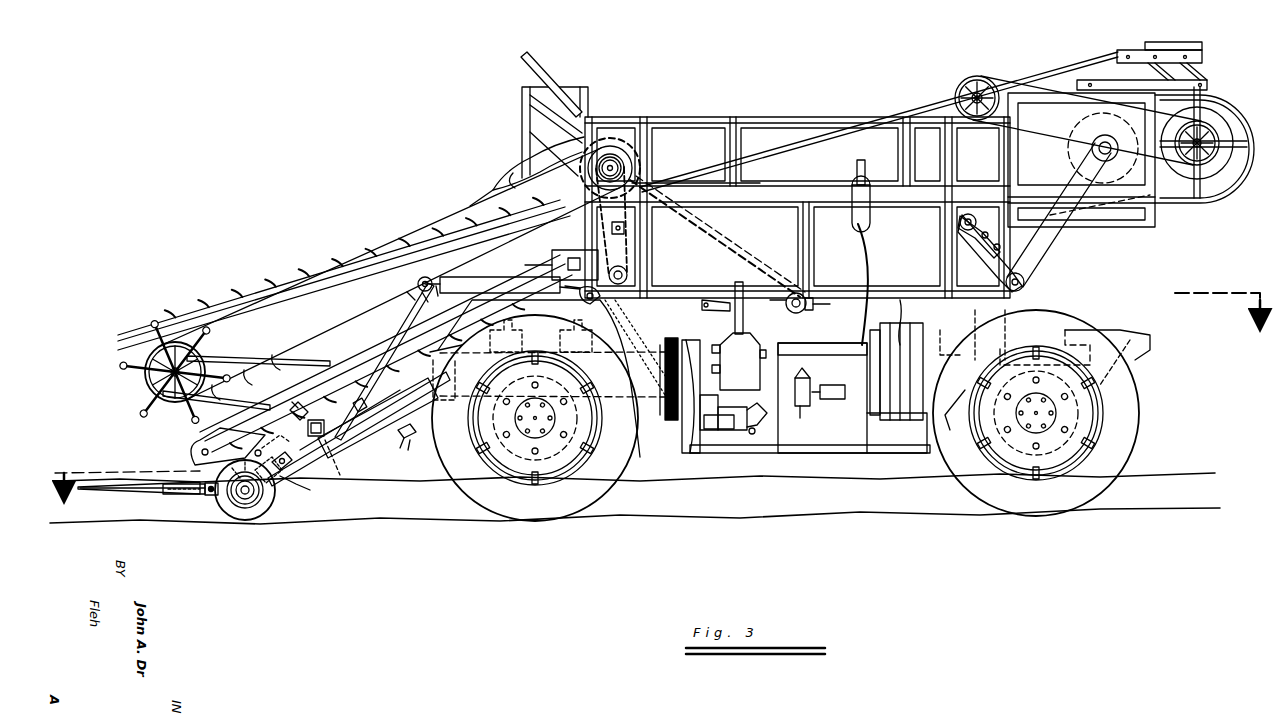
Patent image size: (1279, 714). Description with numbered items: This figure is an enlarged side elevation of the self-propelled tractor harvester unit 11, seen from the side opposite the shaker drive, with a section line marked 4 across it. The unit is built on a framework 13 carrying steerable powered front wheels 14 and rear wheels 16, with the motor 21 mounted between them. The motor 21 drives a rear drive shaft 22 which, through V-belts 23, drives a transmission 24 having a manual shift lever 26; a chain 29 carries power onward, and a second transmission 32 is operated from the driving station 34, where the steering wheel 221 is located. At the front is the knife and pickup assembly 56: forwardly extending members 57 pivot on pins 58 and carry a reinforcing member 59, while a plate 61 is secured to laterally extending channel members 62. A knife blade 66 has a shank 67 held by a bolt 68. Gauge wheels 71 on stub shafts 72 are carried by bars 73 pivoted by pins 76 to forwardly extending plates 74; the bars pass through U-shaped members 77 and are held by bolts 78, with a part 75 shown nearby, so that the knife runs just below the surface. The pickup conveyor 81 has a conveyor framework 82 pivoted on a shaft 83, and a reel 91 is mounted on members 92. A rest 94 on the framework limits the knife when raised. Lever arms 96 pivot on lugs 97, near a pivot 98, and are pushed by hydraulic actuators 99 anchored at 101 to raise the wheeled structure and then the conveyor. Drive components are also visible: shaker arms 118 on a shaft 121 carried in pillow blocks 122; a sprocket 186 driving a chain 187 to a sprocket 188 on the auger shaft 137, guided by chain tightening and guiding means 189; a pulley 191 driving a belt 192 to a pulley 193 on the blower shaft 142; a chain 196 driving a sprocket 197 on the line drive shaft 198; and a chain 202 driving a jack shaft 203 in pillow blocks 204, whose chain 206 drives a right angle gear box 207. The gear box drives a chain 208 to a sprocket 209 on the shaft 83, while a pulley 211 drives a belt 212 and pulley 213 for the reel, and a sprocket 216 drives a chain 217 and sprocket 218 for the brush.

The tractor harvester unit 11 is at (426, 72).
The framework 13 is at (669, 116).
The front wheels 14 is at (465, 490).
The rear wheels 16 is at (1132, 440).
The motor 21 is at (835, 371).
The rear drive shaft 22 is at (728, 435).
The V-belts 23 is at (665, 395).
The transmission 24 is at (745, 367).
The manual shift lever 26 is at (722, 308).
The chain 29 is at (788, 308).
The transmission 32 is at (742, 410).
The driving station 34 is at (567, 84).
The knife and pickup assembly 56 is at (312, 310).
The forwardly extending members 57 is at (350, 435).
The pins 58 is at (438, 380).
The reinforcing member 59 is at (393, 393).
The plate 61 is at (342, 430).
The channel members 62 is at (316, 440).
The knife blade 66 is at (118, 508).
The shank 67 is at (198, 498).
The bolt 68 is at (214, 498).
The wheels 71 is at (252, 518).
The stub shafts 72 is at (266, 499).
The bars 73 is at (308, 412).
The forwardly extending plates 74 is at (300, 488).
The plate 75 is at (280, 476).
The pins 76 is at (272, 446).
The U-shaped members 77 is at (275, 452).
The bolts 78 is at (255, 455).
The pickup conveyor 81 is at (190, 453).
The conveyor framework 82 is at (312, 345).
The shaft 83 is at (625, 160).
The reel 91 is at (145, 330).
The members 92 is at (250, 378).
The rest 94 is at (400, 446).
The lever arms 96 is at (378, 360).
The lugs 97 is at (350, 420).
The pivot pin 98 is at (420, 295).
The hydraulic actuators 99 is at (478, 280).
The pivotal connection 101 is at (580, 296).
The shaker arms 118 is at (808, 125).
The shaft 121 is at (985, 90).
The pillow blocks 122 is at (960, 85).
The shaft 137 is at (1100, 162).
The shaft 142 is at (1220, 128).
The sprocket 186 is at (1026, 278).
The chain 187 is at (980, 250).
The sprocket 188 is at (1068, 165).
The chain tightening and guiding means 189 is at (980, 212).
The pulley 191 is at (970, 128).
The belt 192 is at (1068, 135).
The pulley 193 is at (1170, 135).
The chain 196 is at (940, 330).
The sprocket 197 is at (950, 410).
The line drive shaft 198 is at (1132, 316).
The chain 202 is at (905, 300).
The jack shaft 203 is at (845, 300).
The pillow blocks 204 is at (890, 300).
The chain 206 is at (828, 300).
The right angle gear box 207 is at (808, 333).
The chain 208 is at (672, 228).
The sprocket 209 is at (630, 172).
The pulley 211 is at (585, 160).
The belt 212 is at (372, 270).
The pulley 213 is at (205, 353).
The sprocket 216 is at (665, 192).
The chain 217 is at (596, 234).
The sprocket 218 is at (630, 270).
The steering wheel 221 is at (534, 60).
The section line 4- 4 is at (657, 411).